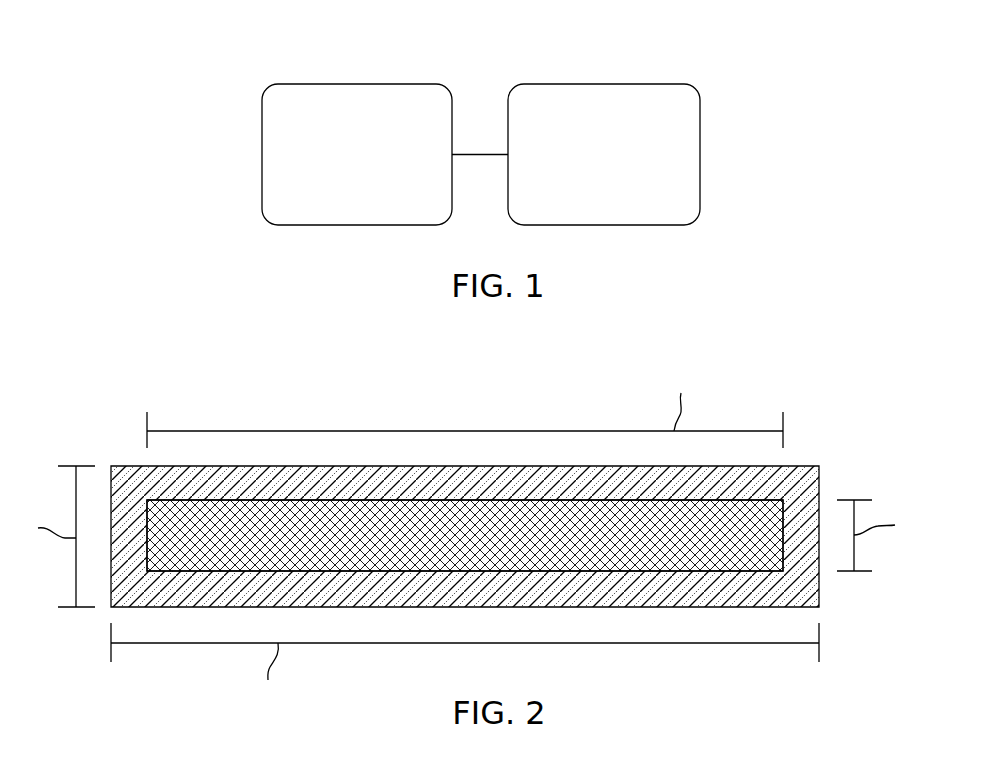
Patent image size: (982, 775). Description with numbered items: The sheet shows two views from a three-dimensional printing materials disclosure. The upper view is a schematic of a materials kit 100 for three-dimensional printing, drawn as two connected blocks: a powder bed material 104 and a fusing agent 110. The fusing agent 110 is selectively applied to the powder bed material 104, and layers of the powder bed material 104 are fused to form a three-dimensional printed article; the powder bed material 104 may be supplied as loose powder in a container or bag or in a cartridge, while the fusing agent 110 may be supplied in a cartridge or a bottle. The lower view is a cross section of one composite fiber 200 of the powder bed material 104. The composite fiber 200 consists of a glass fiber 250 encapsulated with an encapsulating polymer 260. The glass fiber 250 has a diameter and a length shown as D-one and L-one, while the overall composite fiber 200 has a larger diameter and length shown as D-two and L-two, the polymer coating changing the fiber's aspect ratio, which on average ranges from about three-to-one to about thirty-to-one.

In FIG. 1, the materials kit 100 is at (300, 43).
In FIG. 1, the powder bed material 104 is at (337, 166).
In FIG. 1, the fusing agent 110 is at (583, 166).
In FIG. 2, the composite fiber 200 is at (201, 355).
In FIG. 2, the glass fiber 250 is at (173, 523).
In FIG. 2, the encapsulating polymer 260 is at (783, 480).